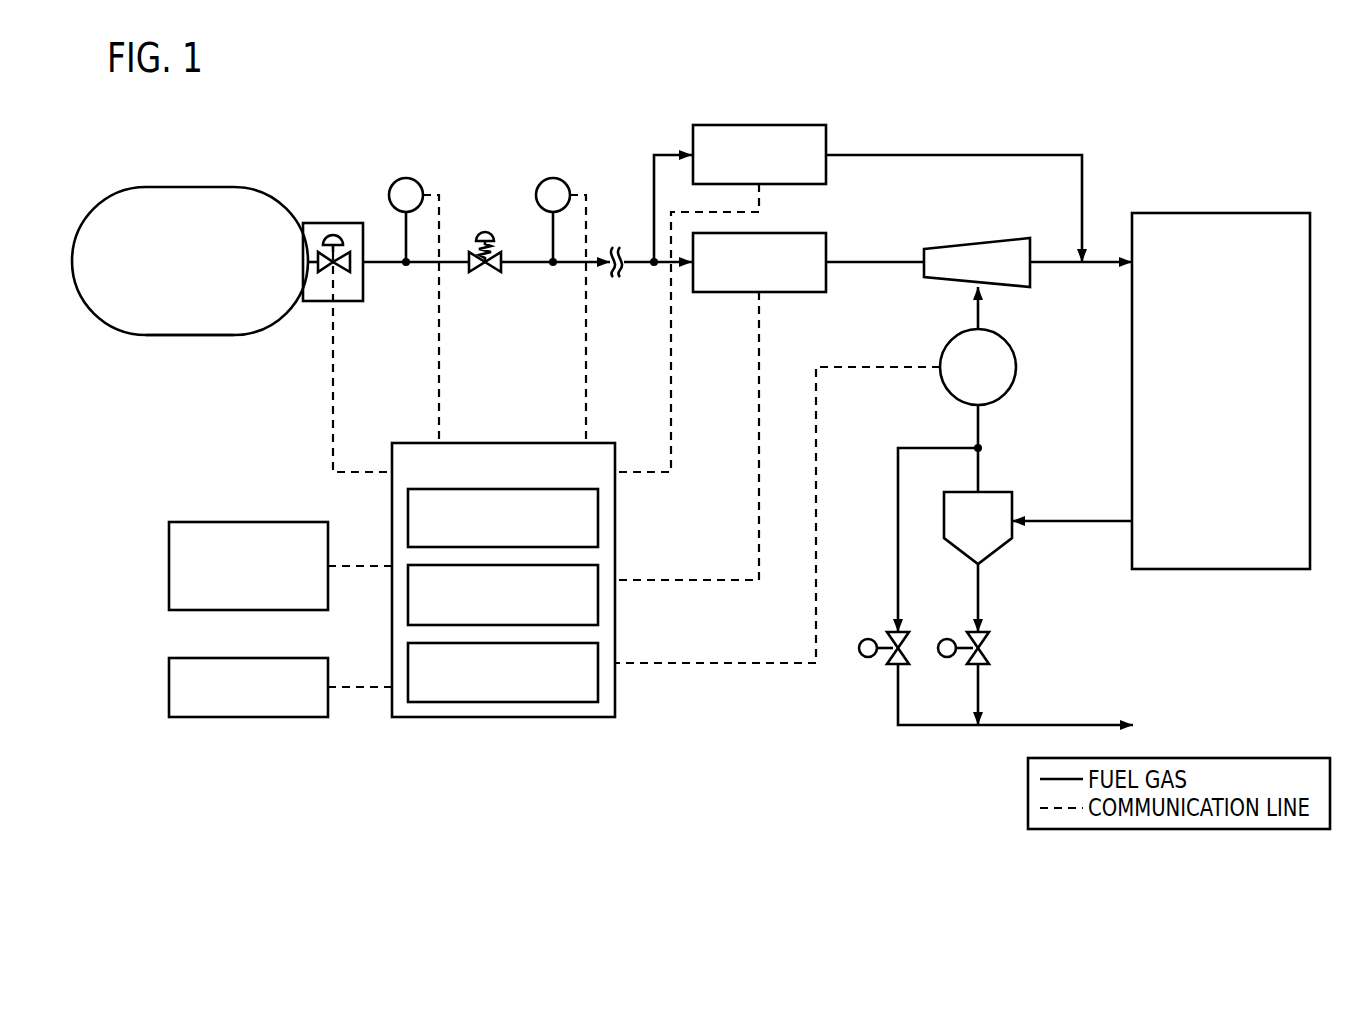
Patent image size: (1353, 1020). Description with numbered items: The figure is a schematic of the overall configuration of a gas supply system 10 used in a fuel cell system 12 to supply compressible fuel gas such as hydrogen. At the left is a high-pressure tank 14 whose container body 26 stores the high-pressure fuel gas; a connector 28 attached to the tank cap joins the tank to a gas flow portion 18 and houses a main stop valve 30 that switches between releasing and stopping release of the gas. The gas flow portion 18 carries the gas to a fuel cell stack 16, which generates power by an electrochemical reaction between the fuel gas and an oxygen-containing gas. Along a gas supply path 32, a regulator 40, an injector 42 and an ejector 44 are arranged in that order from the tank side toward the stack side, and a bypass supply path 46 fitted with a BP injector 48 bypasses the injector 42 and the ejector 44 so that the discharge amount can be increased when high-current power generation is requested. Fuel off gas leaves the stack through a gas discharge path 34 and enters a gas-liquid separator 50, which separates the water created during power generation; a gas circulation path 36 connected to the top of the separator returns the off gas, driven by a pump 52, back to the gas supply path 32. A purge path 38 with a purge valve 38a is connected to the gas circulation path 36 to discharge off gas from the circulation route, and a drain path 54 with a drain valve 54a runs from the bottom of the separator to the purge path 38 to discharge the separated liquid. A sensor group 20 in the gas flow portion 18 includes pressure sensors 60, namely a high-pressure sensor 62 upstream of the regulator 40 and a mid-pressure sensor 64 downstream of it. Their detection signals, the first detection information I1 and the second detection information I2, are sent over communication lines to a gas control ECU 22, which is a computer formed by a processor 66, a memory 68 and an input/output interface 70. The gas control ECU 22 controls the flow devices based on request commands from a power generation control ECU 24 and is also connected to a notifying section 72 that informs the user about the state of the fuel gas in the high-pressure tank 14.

The gas supply system 10 is at (250, 100).
The fuel cell system 12 is at (284, 100).
The high-pressure tank 14 is at (176, 183).
The fuel cell stack 16 is at (1268, 212).
The gas flow portion 18 is at (963, 137).
The sensor group 20 is at (498, 174).
The gas control ECU 22 is at (500, 484).
The power generation control ECU 24 is at (168, 580).
The container body 26 is at (183, 338).
The connector 28 is at (350, 302).
The main stop valve 30 is at (335, 232).
The gas supply path 32 is at (527, 268).
The gas discharge path 34 is at (1070, 523).
The gas circulation path 36 is at (978, 428).
The purge path 38 is at (897, 530).
The purge valve 38a is at (862, 660).
The regulator 40 is at (487, 272).
The injector 42 is at (787, 232).
The ejector 44 is at (970, 237).
The bypass supply path 46 is at (883, 152).
The BP injector 48 is at (787, 123).
The gas-liquid separator 50 is at (993, 492).
The pump 52 is at (947, 340).
The drain path 54 is at (980, 598).
The drain valve 54a is at (985, 652).
The pressure sensors 60 is at (487, 275).
The high-pressure sensor 62 is at (407, 178).
The mid-pressure sensor 64 is at (553, 177).
The processor 66 is at (598, 522).
The memory 68 is at (598, 608).
The input/output interface 70 is at (598, 688).
The notifying section 72 is at (168, 688).
The first detection information I1 is at (422, 428).
The second detection information I2 is at (610, 428).